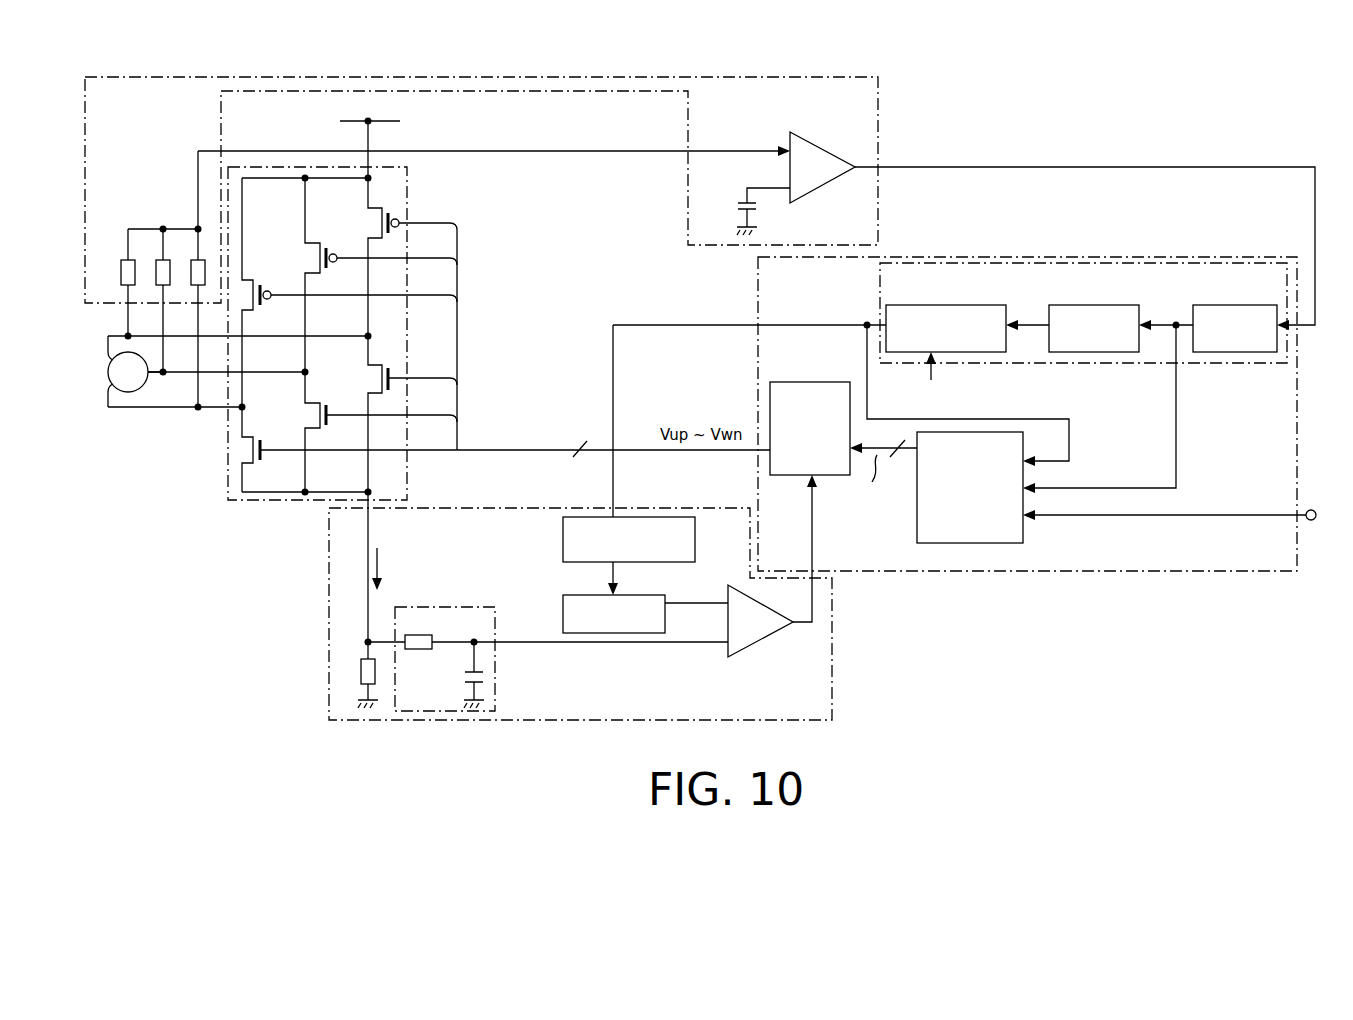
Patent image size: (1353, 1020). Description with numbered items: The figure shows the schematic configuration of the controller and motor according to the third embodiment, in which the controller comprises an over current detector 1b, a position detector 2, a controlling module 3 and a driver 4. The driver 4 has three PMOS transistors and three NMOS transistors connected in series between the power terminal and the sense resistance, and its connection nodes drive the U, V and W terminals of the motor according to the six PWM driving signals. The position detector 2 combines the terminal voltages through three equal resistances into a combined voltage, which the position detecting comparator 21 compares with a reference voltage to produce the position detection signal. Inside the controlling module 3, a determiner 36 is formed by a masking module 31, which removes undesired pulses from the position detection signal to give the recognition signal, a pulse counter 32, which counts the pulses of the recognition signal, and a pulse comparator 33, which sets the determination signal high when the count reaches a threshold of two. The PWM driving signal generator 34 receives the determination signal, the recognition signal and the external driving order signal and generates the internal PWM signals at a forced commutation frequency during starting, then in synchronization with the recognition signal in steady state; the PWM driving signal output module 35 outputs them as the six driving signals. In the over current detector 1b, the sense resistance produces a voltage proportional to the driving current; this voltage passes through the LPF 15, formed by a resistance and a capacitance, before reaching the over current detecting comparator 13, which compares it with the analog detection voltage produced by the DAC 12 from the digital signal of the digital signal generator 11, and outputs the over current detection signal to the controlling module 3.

The over current detector 1b is at (832, 675).
The position detector 2 is at (878, 103).
The controlling module 3 is at (1213, 257).
The driver 4 is at (228, 470).
The digital signal generator 11 is at (563, 535).
The DAC 12 is at (563, 610).
The over current detecting comparator 13 is at (758, 642).
The LPF 15 is at (495, 682).
The position detecting comparator 21 is at (826, 142).
The masking module 31 is at (1237, 305).
The pulse counter 32 is at (1095, 305).
The pulse comparator 33 is at (933, 305).
The PWM driving signal generator 34 is at (1023, 530).
The PWM driving signal output module 35 is at (815, 382).
The determiner 36 is at (1233, 363).